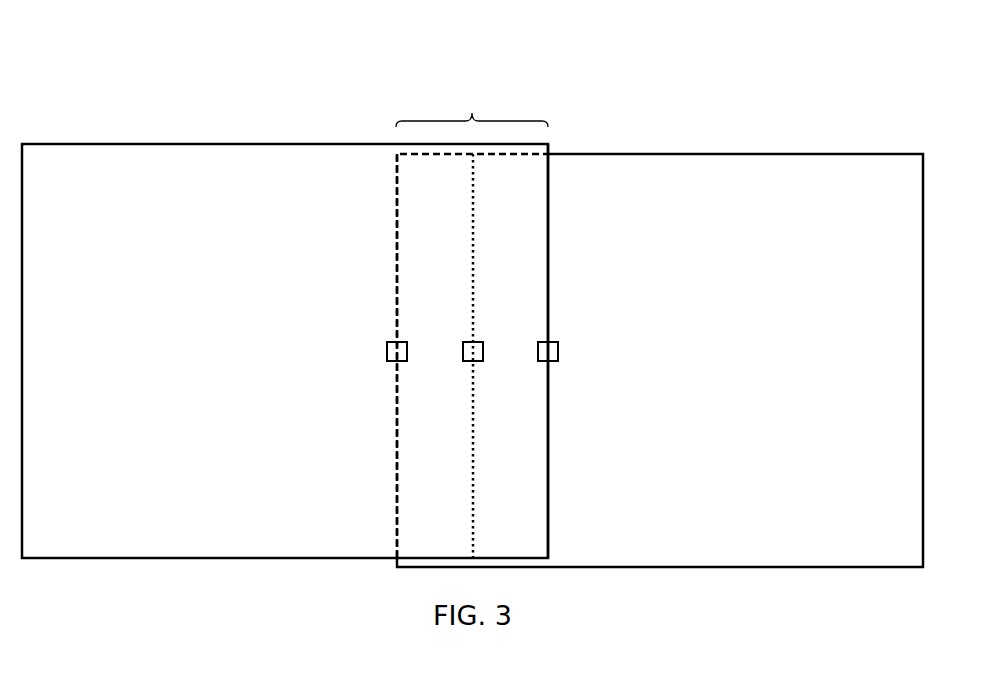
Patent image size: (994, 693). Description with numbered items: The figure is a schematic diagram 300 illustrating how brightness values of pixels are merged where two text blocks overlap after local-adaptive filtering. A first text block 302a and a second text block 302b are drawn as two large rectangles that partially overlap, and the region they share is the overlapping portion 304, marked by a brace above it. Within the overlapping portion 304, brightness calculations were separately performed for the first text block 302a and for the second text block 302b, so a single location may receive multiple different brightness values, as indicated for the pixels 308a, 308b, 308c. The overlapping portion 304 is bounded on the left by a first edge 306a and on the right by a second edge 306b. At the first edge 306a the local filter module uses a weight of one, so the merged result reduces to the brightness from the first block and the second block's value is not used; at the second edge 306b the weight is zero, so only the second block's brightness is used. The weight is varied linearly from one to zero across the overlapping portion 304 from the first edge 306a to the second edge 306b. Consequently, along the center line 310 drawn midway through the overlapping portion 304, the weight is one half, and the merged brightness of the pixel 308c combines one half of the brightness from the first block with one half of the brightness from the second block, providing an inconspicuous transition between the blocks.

The schematic diagram 300 is at (186, 62).
The first text block 302a is at (89, 549).
The second text block 302b is at (915, 556).
The overlapping portion 304 is at (472, 105).
The first edge 306a is at (390, 291).
The second edge 306b is at (555, 291).
The pixel 308a is at (388, 358).
The pixel 308b is at (557, 357).
The pixel 308c is at (462, 355).
The center line 310 is at (473, 493).